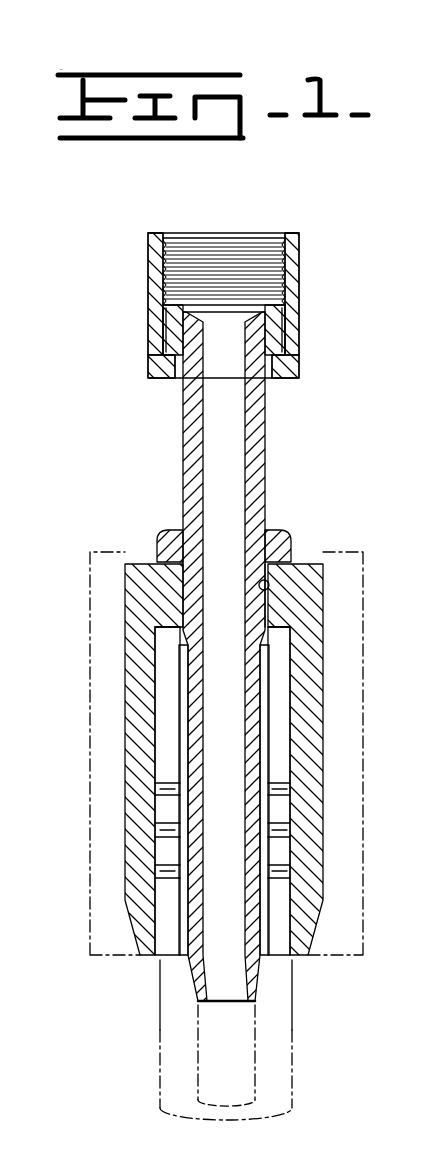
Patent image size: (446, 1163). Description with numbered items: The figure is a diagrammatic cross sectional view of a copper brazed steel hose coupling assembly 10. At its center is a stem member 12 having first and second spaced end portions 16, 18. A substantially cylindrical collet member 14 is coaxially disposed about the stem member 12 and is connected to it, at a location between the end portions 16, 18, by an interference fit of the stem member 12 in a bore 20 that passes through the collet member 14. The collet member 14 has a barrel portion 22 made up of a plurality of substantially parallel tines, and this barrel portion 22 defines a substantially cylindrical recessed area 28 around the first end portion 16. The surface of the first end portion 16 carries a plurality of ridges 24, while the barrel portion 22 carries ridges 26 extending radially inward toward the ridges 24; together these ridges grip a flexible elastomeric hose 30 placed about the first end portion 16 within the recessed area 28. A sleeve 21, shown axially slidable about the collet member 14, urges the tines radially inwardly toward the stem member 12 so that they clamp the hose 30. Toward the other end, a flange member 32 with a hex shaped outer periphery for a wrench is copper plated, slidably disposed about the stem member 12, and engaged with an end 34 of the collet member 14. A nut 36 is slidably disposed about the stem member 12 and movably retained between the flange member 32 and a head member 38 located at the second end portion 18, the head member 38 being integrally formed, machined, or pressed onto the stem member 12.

The hose coupling assembly 10 is at (70, 432).
The stem member 12 is at (268, 443).
The collet member 14 is at (325, 612).
The first end portion 16 is at (258, 990).
The second end portion 18 is at (285, 341).
The bore 20 is at (298, 580).
The sleeve 21 is at (88, 796).
The barrel portion 22 is at (313, 803).
The ridges 24 is at (272, 760).
The ridges 26 is at (280, 840).
The recessed area 28 is at (280, 688).
The hose 30 is at (165, 1075).
The flange member 32 is at (283, 535).
The end 34 is at (137, 560).
The nut 36 is at (300, 283).
The head member 38 is at (168, 330).